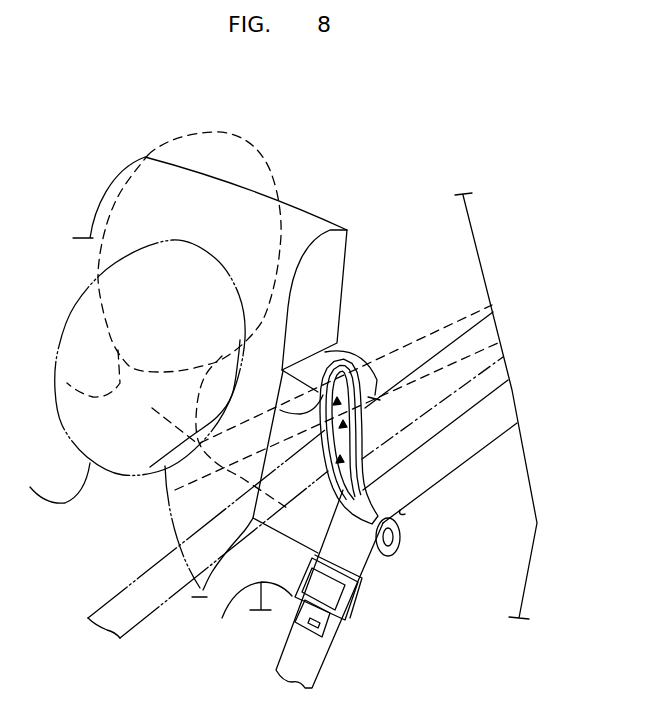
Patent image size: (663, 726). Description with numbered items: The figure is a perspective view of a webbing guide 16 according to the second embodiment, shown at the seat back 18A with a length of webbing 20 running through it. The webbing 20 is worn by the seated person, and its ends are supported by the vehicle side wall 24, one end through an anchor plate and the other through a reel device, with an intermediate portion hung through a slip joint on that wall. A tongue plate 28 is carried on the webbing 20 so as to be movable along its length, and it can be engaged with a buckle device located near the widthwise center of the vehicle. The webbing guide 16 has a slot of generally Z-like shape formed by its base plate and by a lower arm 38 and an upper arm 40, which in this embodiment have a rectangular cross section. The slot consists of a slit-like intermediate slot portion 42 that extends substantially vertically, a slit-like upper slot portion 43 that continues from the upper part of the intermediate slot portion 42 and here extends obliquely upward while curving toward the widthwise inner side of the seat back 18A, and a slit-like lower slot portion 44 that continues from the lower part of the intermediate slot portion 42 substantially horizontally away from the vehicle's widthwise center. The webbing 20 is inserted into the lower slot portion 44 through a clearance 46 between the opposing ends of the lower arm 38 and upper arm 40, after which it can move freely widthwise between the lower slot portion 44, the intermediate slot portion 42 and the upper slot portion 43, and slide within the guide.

The webbing guide 16 is at (355, 357).
The upper arm 40 is at (365, 367).
The intermediate slot portion 42 is at (325, 458).
The upper slot portion 43 is at (280, 410).
The webbing 20 is at (363, 654).
The clearance 46 is at (405, 510).
The lower arm 38 is at (398, 546).
The lower slot portion 44 is at (355, 523).
The tongue plate 28 is at (352, 607).
The seat back 18A is at (239, 616).
The vehicle side wall 24 is at (521, 470).